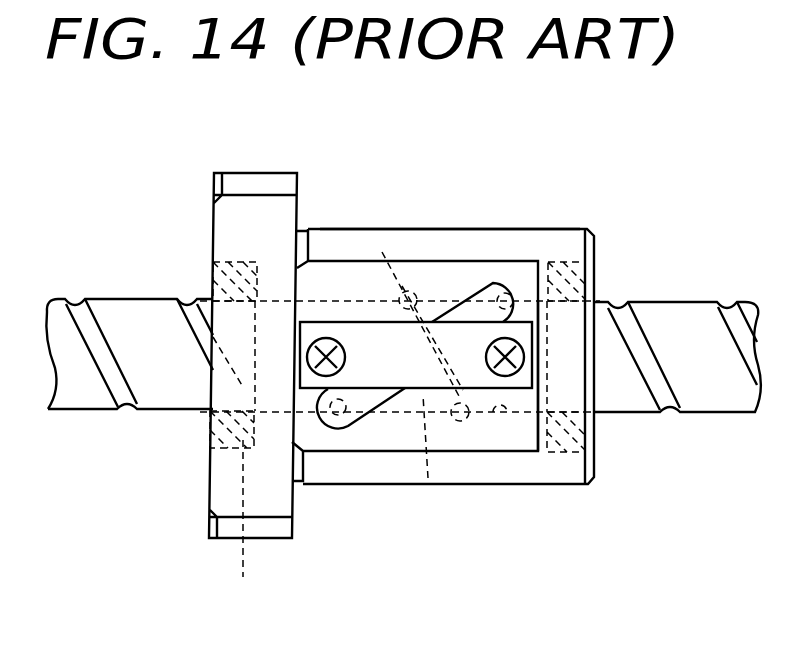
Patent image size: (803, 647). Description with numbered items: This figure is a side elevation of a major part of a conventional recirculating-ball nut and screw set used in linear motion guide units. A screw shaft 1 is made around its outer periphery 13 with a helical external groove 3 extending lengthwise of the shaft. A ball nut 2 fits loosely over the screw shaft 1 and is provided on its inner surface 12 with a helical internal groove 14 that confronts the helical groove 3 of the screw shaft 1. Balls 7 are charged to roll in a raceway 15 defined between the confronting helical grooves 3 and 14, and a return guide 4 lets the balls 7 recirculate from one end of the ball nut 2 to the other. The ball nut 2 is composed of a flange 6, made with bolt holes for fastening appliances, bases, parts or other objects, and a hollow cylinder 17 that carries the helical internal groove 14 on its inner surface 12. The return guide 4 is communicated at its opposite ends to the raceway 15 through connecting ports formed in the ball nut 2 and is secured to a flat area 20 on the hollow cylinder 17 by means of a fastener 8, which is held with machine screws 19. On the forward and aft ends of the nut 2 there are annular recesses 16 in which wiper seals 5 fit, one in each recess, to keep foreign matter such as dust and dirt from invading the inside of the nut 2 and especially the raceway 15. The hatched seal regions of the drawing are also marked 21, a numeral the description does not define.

The screw shaft 1 is at (139, 332).
The ball nut 2 is at (501, 227).
The helical external groove 3 is at (103, 360).
The return guide 4 is at (370, 389).
The wiper seal 5 is at (213, 264).
The flange 6 is at (255, 228).
The balls 7 is at (428, 478).
The fastener 8 is at (368, 342).
The inner surface 12 is at (502, 415).
The outer periphery 13 is at (682, 348).
The helical internal groove 14 is at (409, 291).
The raceway 15 is at (397, 293).
The annular recess 16 is at (242, 526).
The hollow cylinder 17 is at (440, 229).
The machine screws 19 is at (326, 372).
The flat area 20 is at (522, 433).
The seal groove 21 is at (213, 392).